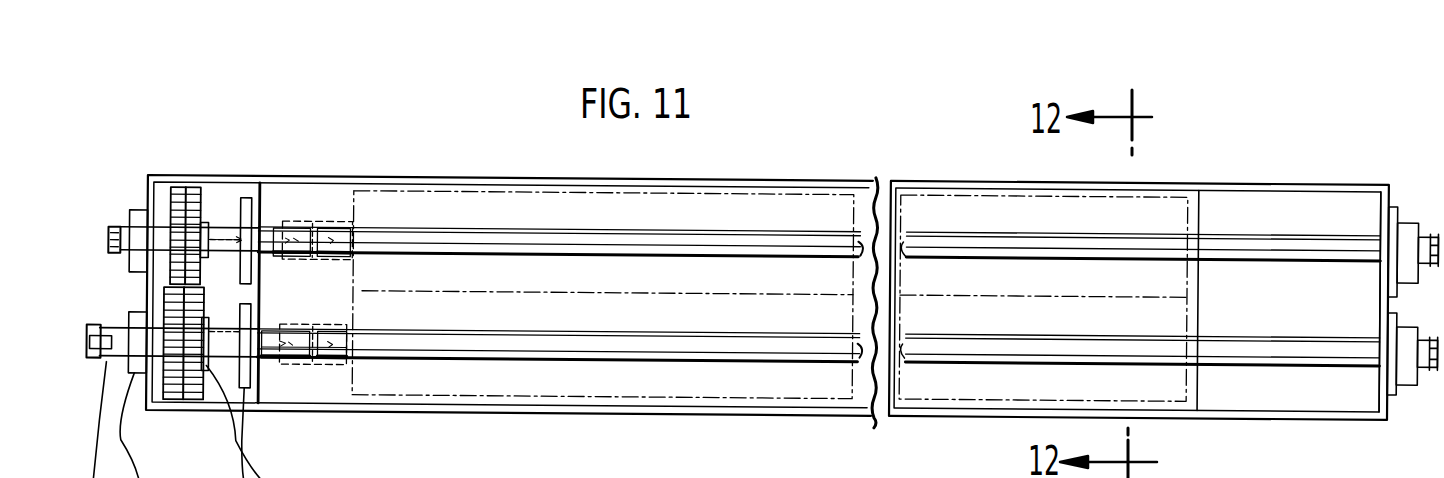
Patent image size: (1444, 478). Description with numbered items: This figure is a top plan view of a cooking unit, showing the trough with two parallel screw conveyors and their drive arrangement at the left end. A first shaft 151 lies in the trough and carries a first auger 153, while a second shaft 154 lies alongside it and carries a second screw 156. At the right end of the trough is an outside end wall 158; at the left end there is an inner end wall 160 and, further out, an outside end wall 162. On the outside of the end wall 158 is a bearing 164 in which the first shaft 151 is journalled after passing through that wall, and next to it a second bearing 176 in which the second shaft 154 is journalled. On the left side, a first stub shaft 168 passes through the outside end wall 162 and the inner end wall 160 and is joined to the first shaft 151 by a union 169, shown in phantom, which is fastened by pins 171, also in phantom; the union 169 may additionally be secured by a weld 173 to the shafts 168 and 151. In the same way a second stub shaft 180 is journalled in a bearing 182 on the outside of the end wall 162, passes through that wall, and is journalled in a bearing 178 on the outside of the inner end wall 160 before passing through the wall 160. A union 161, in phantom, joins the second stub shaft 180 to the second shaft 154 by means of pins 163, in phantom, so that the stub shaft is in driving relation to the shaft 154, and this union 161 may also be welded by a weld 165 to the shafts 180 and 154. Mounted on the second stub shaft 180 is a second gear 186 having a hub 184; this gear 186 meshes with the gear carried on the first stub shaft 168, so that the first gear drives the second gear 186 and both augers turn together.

The first shaft 151 is at (457, 345).
The first auger 153 is at (353, 421).
The second shaft 154 is at (613, 243).
The second screw 156 is at (473, 173).
The outside end wall 158 is at (1380, 293).
The inner end wall 160 is at (265, 183).
The union 161 is at (313, 221).
The outside end wall 162 is at (140, 400).
The pins 163 is at (332, 256).
The bearing 164 is at (1397, 384).
The weld 165 is at (247, 255).
The first stub shaft 168 is at (280, 363).
The union 169 is at (330, 325).
The pins 171 is at (333, 364).
The weld 173 is at (275, 325).
The second bearing 176 is at (1395, 215).
The bearing 178 is at (248, 197).
The second stub shaft 180 is at (108, 236).
The bearing 182 is at (130, 212).
The hub 184 is at (205, 220).
The second gear 186 is at (187, 187).